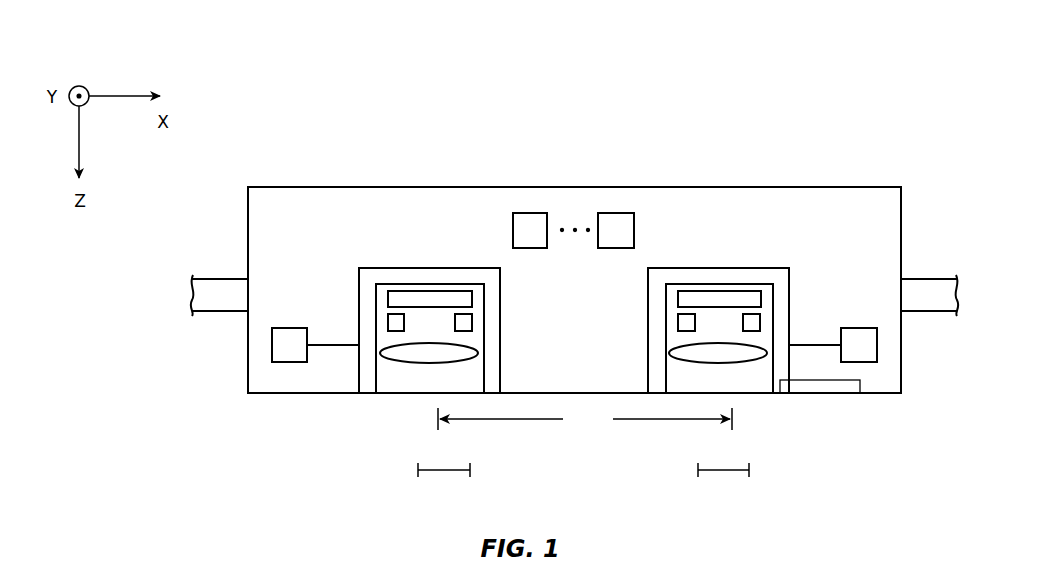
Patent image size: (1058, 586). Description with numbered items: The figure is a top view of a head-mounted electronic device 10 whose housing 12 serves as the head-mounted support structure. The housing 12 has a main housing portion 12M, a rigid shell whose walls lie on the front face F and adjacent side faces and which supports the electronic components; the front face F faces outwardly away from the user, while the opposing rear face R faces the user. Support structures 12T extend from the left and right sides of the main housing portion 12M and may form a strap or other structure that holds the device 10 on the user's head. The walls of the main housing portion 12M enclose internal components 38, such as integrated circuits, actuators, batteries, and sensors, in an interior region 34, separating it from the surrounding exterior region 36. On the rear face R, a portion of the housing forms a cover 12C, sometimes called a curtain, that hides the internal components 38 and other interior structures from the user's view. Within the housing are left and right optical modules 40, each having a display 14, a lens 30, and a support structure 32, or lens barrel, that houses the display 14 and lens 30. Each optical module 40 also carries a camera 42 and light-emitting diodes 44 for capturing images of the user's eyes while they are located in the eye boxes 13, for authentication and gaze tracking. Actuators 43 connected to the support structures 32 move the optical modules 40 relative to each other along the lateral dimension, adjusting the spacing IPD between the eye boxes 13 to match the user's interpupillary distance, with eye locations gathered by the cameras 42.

The electronic device 10 is at (872, 52).
The housing 12 is at (841, 196).
The main housing portion 12M is at (276, 186).
The cover 12C is at (264, 398).
The support structures 12T is at (221, 298).
The eye boxes 13 is at (471, 470).
The displays 14 is at (453, 300).
The lens 30 is at (669, 353).
The support structure 32 is at (380, 280).
The interior region 34 is at (866, 236).
The exterior region 36 is at (389, 153).
The internal components 38 is at (530, 222).
The optical modules 40 is at (349, 382).
The camera 42 is at (679, 322).
The actuators 43 is at (289, 340).
The light-emitting diodes 44 is at (394, 322).
The front face F is at (709, 167).
The rear face R is at (856, 423).
The interpupillary distance IPD is at (585, 419).